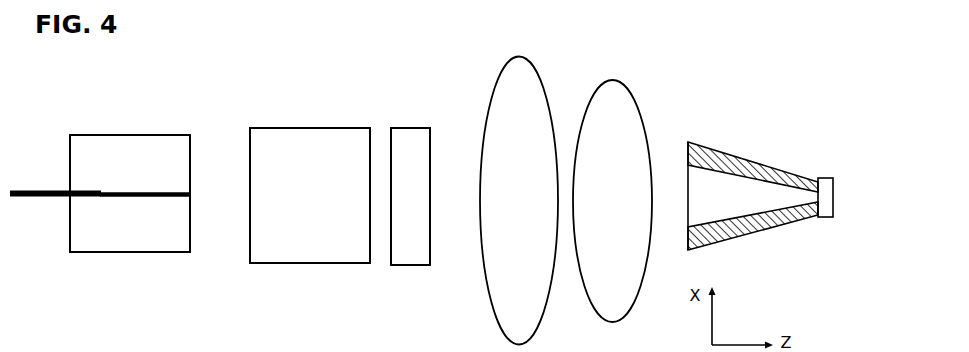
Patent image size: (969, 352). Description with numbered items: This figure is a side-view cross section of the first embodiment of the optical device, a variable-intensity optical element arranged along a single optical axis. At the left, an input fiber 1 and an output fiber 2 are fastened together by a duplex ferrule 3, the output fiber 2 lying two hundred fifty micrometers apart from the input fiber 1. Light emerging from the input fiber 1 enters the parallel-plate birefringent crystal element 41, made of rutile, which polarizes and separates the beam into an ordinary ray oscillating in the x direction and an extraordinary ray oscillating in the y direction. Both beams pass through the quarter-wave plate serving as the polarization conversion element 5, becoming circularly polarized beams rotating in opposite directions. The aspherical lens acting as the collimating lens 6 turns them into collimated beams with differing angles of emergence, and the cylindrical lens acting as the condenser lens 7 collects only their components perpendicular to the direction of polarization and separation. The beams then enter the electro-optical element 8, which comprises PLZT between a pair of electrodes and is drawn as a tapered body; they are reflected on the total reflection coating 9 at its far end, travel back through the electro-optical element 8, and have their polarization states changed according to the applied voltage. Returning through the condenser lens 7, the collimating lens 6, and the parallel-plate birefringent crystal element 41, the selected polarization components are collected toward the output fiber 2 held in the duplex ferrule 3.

The input fiber 1 is at (55, 181).
The output fiber 2 is at (109, 219).
The duplex ferrule 3 is at (130, 179).
The parallel-plate birefringent crystal element 41 is at (310, 182).
The polarization conversion element 5 is at (410, 214).
The collimating lens 6 is at (519, 186).
The condenser lens 7 is at (612, 186).
The electro-optical element 8 is at (753, 188).
The total reflection coating 9 is at (827, 215).